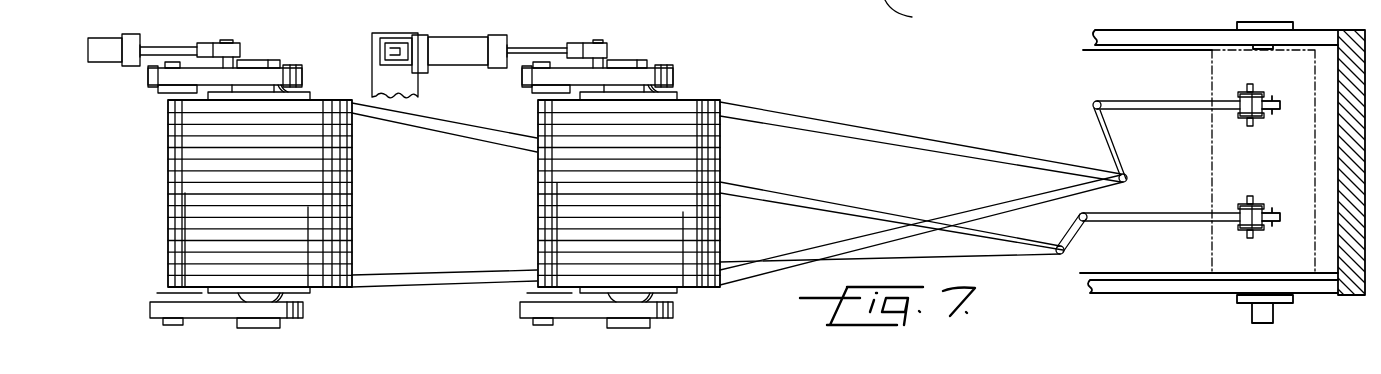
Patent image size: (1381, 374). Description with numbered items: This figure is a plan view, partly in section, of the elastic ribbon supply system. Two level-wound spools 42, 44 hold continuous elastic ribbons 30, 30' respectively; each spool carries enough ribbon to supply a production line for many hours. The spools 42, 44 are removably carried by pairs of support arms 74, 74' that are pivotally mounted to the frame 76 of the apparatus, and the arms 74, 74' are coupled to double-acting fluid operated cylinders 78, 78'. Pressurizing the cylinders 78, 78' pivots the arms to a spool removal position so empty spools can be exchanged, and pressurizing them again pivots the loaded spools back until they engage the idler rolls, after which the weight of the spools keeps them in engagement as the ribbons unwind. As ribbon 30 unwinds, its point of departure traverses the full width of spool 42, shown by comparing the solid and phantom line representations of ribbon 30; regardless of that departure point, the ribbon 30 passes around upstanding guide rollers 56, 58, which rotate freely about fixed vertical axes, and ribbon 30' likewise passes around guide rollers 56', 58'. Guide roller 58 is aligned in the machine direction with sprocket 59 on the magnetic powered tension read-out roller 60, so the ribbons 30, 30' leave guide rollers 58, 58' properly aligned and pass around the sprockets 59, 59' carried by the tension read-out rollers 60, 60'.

The ribbon 30 is at (824, 218).
The ribbon 30' is at (824, 176).
The spool 42 is at (168, 193).
The spool 44 is at (537, 192).
The guide roller 56 is at (1038, 236).
The guide roller 56' is at (1150, 188).
The guide roller 58 is at (1100, 233).
The guide roller 58' is at (1064, 95).
The sprocket 59 is at (1278, 232).
The sprocket 59' is at (1279, 120).
The tension read-out roller 60 is at (1242, 203).
The tension read-out roller 60' is at (1240, 92).
The support arm 74 is at (242, 72).
The support arm 74' is at (619, 72).
The frame 76 is at (909, 14).
The fluid operated cylinder 78 is at (164, 70).
The fluid operated cylinder 78' is at (489, 68).